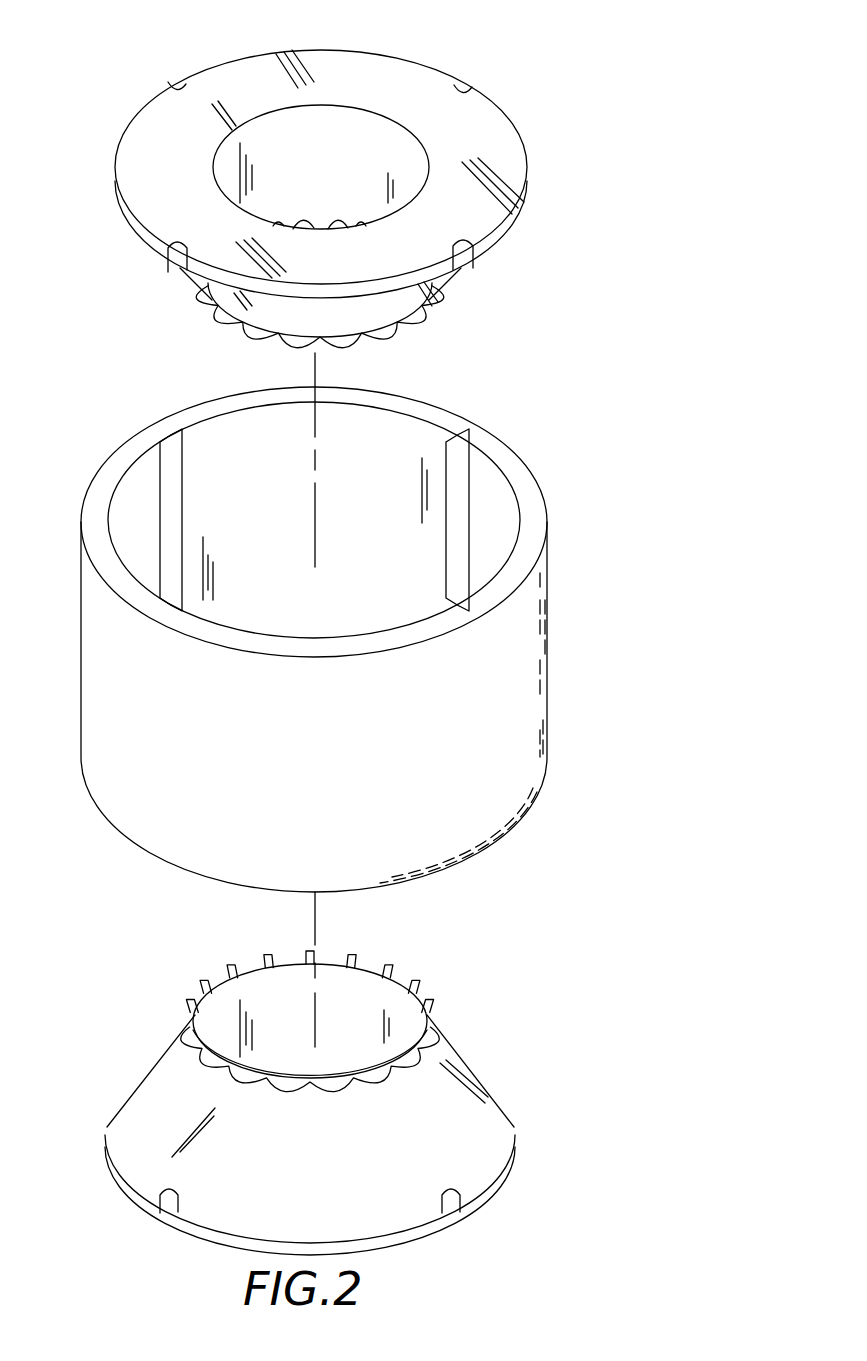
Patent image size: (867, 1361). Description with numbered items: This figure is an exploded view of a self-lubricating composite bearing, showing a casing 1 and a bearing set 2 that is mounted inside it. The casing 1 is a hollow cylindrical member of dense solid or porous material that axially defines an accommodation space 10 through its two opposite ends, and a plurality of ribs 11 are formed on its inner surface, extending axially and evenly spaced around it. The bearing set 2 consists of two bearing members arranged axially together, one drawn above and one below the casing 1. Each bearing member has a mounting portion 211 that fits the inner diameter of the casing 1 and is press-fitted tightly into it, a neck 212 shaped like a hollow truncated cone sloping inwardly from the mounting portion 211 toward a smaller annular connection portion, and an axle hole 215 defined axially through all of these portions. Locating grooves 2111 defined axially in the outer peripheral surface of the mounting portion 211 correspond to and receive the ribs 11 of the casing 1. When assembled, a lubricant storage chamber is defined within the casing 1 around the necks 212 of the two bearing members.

The casing 1 is at (335, 628).
The accommodation space 10 is at (242, 488).
The ribs 11 is at (458, 463).
The bearing set 2 is at (527, 330).
The mounting portion 211 is at (465, 138).
The locating grooves 2111 is at (462, 82).
The neck 212 is at (482, 1108).
The axle hole 215 is at (325, 130).